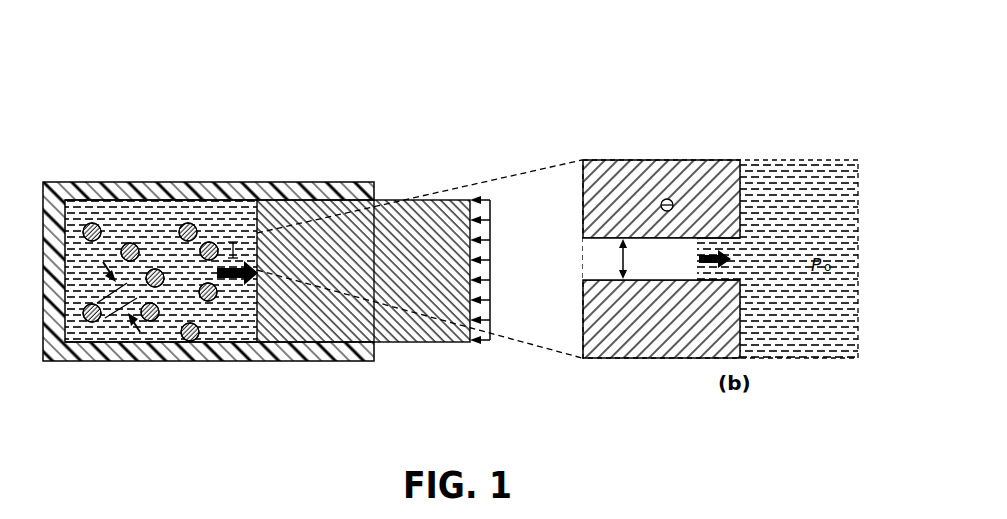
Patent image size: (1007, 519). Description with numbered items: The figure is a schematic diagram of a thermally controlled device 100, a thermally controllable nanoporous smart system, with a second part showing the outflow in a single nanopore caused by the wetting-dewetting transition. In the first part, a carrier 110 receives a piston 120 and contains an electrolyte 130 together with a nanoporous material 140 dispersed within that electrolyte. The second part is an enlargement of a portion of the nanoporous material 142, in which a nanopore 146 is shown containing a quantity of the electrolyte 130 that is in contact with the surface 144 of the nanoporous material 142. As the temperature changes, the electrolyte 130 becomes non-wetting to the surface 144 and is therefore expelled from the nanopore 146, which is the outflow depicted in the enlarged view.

The thermally controlled device 100 is at (74, 131).
The carrier 110 is at (43, 298).
The piston 120 is at (412, 215).
The electrolyte 130 is at (220, 212).
The nanoporous material 140 is at (90, 222).
The portion of the nanoporous material 142 is at (640, 168).
The surface of the nanoporous material 144 is at (741, 197).
The nanopore 146 is at (663, 263).